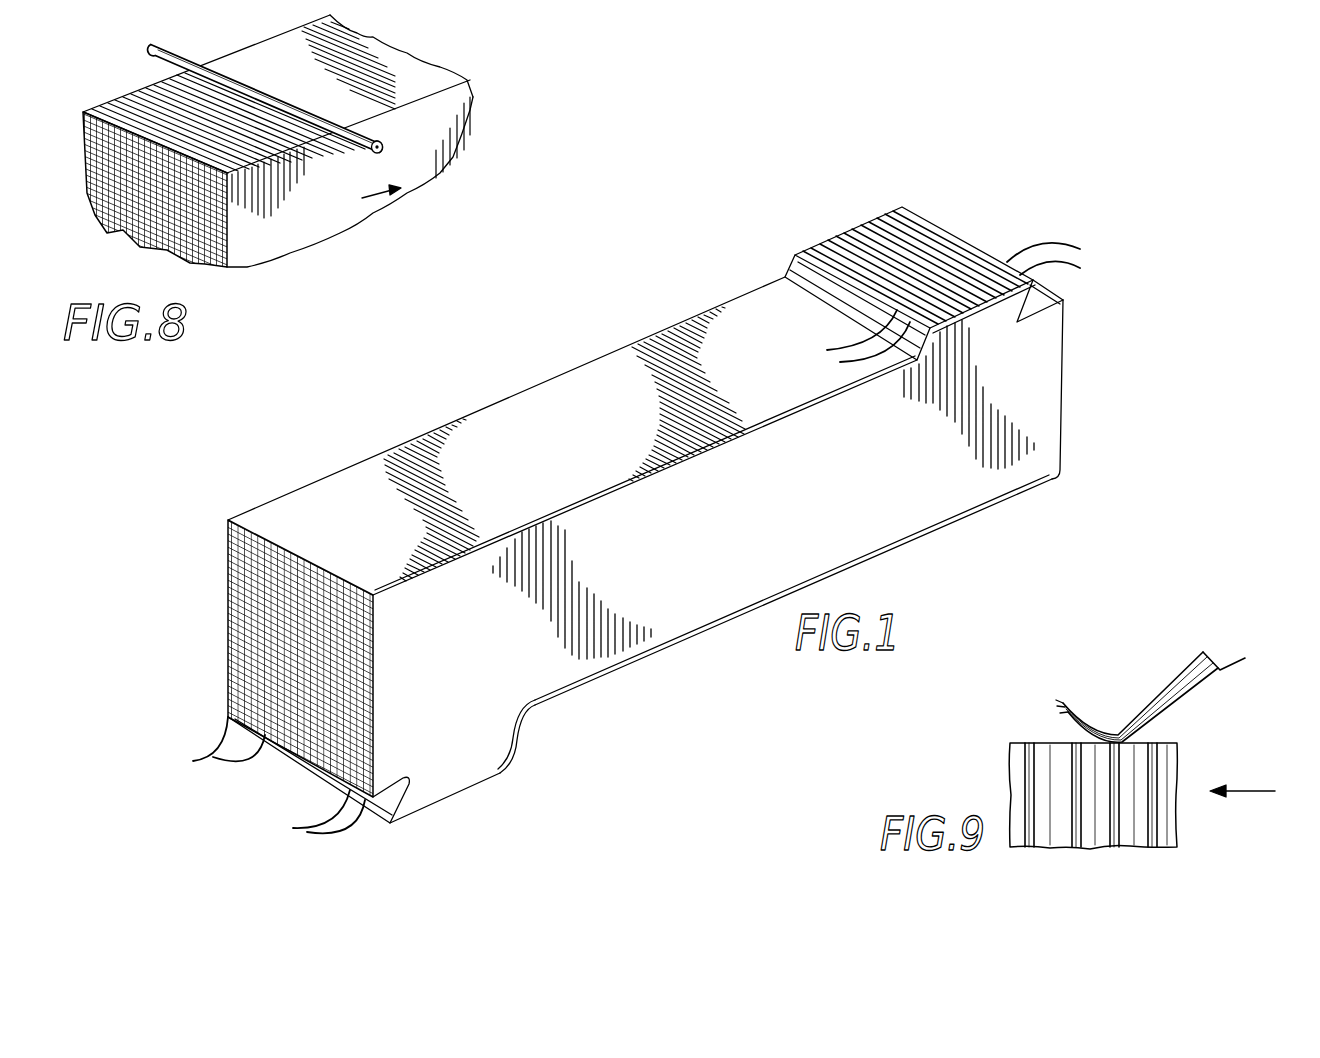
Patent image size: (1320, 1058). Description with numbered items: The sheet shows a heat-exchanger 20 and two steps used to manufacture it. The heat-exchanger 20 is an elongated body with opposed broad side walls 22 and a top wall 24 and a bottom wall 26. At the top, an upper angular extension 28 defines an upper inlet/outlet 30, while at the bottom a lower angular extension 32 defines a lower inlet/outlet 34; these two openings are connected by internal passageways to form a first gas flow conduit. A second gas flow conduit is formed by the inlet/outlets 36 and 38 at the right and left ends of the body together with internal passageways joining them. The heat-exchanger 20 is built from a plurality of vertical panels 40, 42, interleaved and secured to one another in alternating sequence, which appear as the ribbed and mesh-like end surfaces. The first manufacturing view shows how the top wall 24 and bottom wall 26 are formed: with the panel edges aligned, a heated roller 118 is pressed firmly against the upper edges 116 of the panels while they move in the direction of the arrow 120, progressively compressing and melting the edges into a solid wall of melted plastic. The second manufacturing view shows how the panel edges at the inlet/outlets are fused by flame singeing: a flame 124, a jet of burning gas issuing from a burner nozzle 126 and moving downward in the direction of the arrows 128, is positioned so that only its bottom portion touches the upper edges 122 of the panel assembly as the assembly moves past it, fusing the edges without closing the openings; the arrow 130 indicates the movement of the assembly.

In FIG. 1, the heat-exchanger 20 is at (1016, 499).
In FIG. 1, the broad side walls 22 is at (766, 566).
In FIG. 1, the top wall 24 is at (620, 452).
In FIG. 8, the top wall 24 is at (474, 96).
In FIG. 1, the bottom wall 26 is at (688, 637).
In FIG. 1, the upper angular extension 28 is at (783, 277).
In FIG. 1, the upper inlet/outlet 30 is at (988, 247).
In FIG. 1, the lower angular extension 32 is at (519, 745).
In FIG. 1, the lower inlet/outlet 34 is at (440, 797).
In FIG. 1, the inlet/outlet 36 is at (1061, 410).
In FIG. 1, the inlet/outlet 38 is at (227, 637).
In FIG. 1, the vertical panels 40 is at (264, 523).
In FIG. 9, the vertical panels 40 is at (1033, 848).
In FIG. 1, the vertical panels 42 is at (220, 733).
In FIG. 9, the vertical panels 42 is at (1017, 848).
In FIG. 8, the upper edges 116 is at (120, 74).
In FIG. 8, the heated roller 118 is at (385, 146).
In FIG. 8, the arrow 120 is at (360, 195).
In FIG. 9, the upper edges 122 is at (1016, 730).
In FIG. 9, the flame 124 is at (1188, 658).
In FIG. 9, the burner nozzle 126 is at (1203, 641).
In FIG. 9, the arrows 128 is at (1152, 688).
In FIG. 9, the direction of strip feed 130 is at (1251, 763).